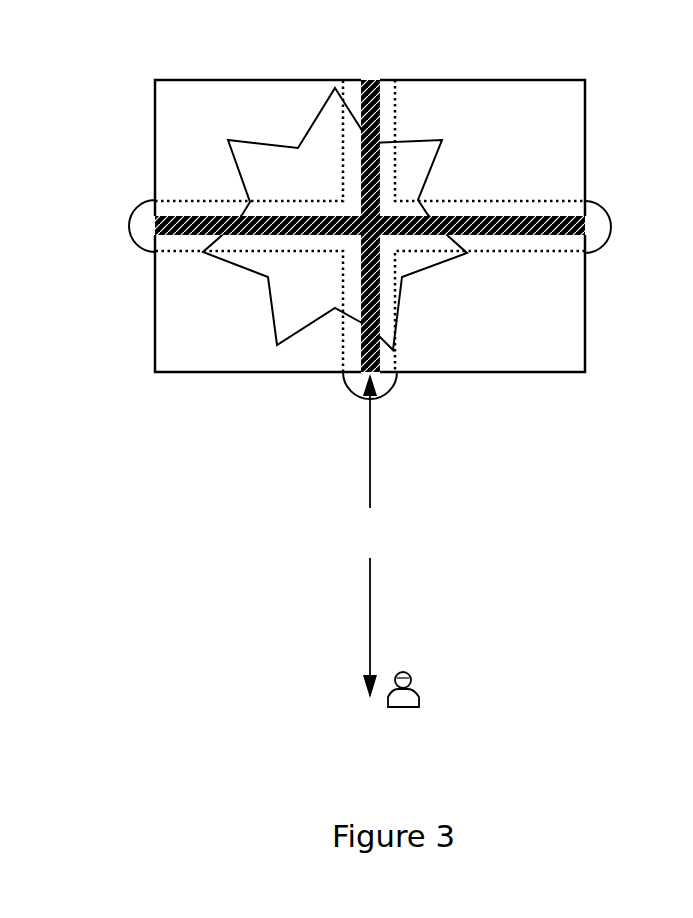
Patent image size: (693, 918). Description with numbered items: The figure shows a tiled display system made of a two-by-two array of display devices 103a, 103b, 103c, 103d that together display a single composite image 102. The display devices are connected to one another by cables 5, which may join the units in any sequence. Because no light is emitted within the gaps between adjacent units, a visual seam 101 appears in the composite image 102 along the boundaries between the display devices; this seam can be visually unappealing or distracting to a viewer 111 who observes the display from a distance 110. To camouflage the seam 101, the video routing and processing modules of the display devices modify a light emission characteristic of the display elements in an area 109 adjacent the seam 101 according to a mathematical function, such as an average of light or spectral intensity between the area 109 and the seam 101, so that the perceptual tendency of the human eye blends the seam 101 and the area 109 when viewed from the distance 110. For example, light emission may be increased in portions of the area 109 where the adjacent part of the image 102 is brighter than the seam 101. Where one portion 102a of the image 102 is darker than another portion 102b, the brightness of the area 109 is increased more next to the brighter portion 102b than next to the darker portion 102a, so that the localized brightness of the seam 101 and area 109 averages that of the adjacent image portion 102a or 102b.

The cables 5 is at (132, 220).
The visual seam 101 is at (377, 74).
The composite image 102 is at (305, 82).
The portion of image 102a is at (300, 173).
The portion of image 102b is at (223, 107).
The display device 103a is at (155, 80).
The display device 103b is at (548, 80).
The display device 103c is at (530, 375).
The display device 103d is at (155, 358).
The area adjacent the seam 109 is at (163, 198).
The distance 110 is at (379, 536).
The viewer 111 is at (420, 690).